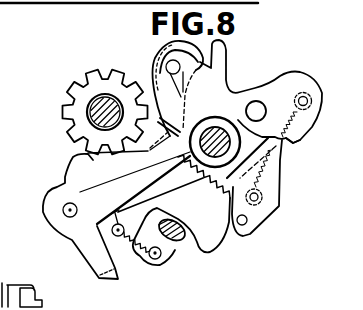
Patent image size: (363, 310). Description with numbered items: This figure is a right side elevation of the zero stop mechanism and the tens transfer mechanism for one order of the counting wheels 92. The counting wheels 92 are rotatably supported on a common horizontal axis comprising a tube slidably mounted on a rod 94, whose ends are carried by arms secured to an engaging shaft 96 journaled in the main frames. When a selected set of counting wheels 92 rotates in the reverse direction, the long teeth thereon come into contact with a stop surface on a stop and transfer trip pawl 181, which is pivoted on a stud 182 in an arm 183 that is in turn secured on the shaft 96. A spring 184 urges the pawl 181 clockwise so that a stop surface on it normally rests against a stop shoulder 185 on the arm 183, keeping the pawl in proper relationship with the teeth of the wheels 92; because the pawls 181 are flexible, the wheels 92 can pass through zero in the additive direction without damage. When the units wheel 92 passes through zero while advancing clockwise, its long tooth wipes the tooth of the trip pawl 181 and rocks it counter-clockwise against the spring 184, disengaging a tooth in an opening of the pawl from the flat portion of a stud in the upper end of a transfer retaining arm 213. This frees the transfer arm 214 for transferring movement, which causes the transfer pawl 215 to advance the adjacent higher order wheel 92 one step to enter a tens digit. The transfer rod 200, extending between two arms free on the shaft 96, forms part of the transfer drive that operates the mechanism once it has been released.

The counting wheels 92 is at (72, 118).
The rod 94 is at (103, 95).
The engaging shaft 96 is at (213, 124).
The stop and transfer trip pawl 181 is at (237, 96).
The stud 182 is at (257, 111).
The arm 183 is at (190, 179).
The spring 184 is at (280, 182).
The stop shoulder 185 is at (292, 140).
The transfer rod 200 is at (185, 248).
The transfer retaining arm 213 is at (60, 182).
The transfer arm 214 is at (125, 252).
The transfer pawl 215 is at (87, 153).